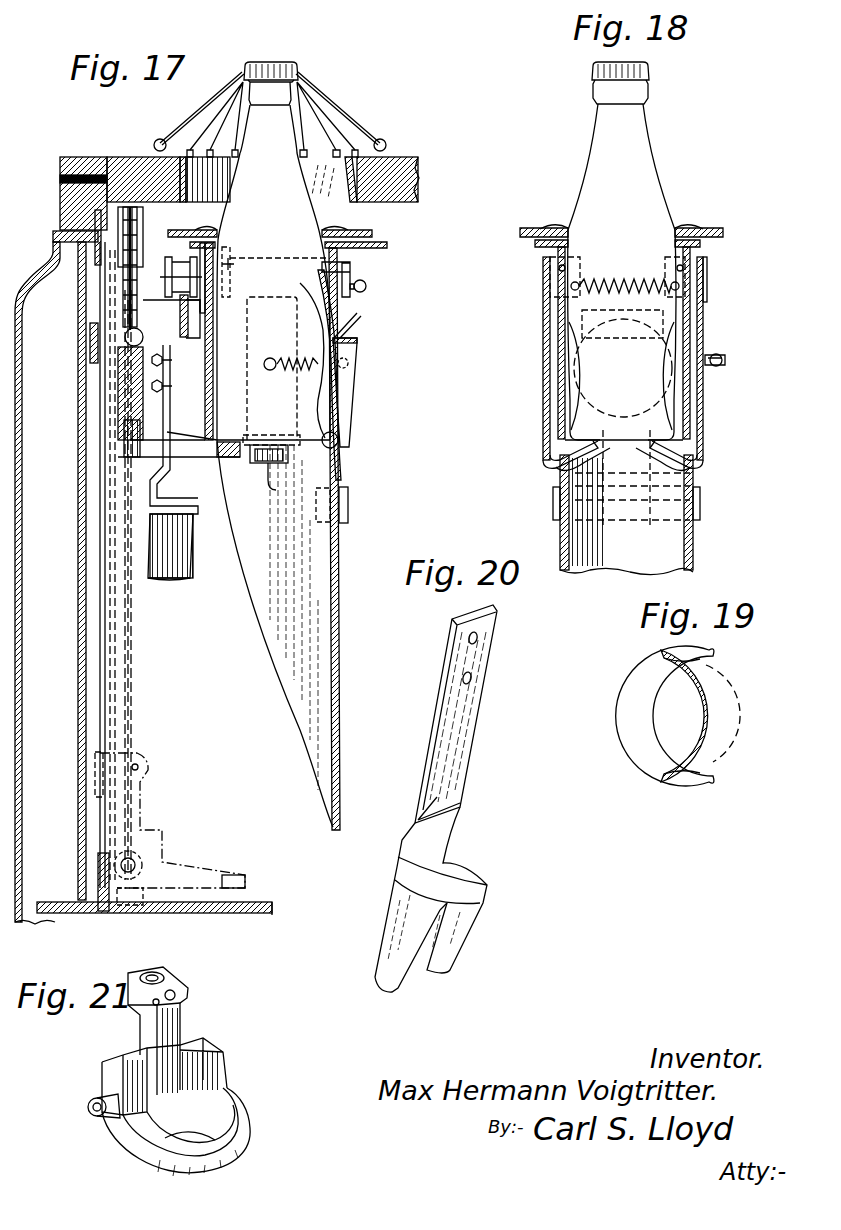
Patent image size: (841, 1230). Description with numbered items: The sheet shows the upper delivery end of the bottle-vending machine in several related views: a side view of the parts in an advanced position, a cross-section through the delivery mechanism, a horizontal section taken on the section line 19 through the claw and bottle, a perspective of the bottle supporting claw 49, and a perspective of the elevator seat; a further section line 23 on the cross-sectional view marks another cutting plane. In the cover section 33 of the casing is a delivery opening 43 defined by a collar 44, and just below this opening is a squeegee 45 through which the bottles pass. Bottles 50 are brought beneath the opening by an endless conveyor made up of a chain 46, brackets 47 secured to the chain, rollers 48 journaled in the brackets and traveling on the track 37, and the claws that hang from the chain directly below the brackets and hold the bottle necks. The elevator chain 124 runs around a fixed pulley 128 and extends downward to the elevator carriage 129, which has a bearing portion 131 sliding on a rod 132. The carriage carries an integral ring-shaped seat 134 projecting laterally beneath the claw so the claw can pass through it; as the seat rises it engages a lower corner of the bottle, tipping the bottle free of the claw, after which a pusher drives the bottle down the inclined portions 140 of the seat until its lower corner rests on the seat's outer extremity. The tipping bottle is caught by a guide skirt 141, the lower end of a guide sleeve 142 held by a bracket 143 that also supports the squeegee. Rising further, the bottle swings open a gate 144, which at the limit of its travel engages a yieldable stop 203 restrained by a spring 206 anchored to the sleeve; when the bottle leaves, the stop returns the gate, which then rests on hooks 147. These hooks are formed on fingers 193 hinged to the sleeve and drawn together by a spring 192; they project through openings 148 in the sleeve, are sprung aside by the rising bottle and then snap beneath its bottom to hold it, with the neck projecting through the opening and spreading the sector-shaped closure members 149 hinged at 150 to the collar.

In FIG. 17, the section line 19 is at (136, 508).
In FIG. 18, the section line 23- 23 is at (523, 338).
In FIG. 17, the cover section 33 is at (419, 181).
In FIG. 17, the track 37 is at (182, 307).
In FIG. 17, the delivery opening 43 is at (317, 160).
In FIG. 17, the collar 44 is at (380, 154).
In FIG. 17, the squeegee 45 is at (338, 224).
In FIG. 18, the squeegee 45 is at (672, 220).
In FIG. 17, the chain 46 is at (196, 345).
In FIG. 17, the brackets 47 is at (200, 306).
In FIG. 17, the rollers 48 is at (180, 262).
In FIG. 17, the bottle supporting claw 49 is at (165, 416).
In FIG. 19, the bottle supporting claw 49 is at (690, 786).
In FIG. 20, the bottle supporting claw 49 is at (488, 886).
In FIG. 18, the bottle 50 is at (623, 363).
In FIG. 19, the bottle 50 is at (740, 718).
In FIG. 17, the elevator chain 124 is at (126, 313).
In FIG. 17, the pulley 128 is at (118, 266).
In FIG. 17, the elevator carriage 129 is at (163, 835).
In FIG. 21, the elevator carriage 129 is at (200, 1042).
In FIG. 17, the bearing portion 131 is at (90, 350).
In FIG. 21, the bearing portion 131 is at (165, 975).
In FIG. 17, the rod 132 is at (115, 733).
In FIG. 21, the seat 134 is at (225, 1150).
In FIG. 21, the inclined portions 140 is at (250, 1112).
In FIG. 17, the guide skirt 141 is at (339, 571).
In FIG. 18, the guide skirt 141 is at (691, 544).
In FIG. 17, the guide sleeve 142 is at (210, 390).
In FIG. 18, the guide sleeve 142 is at (690, 305).
In FIG. 17, the bracket 143 is at (376, 249).
In FIG. 17, the gate 144 is at (330, 395).
In FIG. 17, the hooks 147 is at (282, 465).
In FIG. 18, the hooks 147 is at (700, 463).
In FIG. 17, the openings 148 is at (276, 488).
In FIG. 18, the openings 148 is at (690, 440).
In FIG. 17, the closure members 149 is at (212, 112).
In FIG. 17, the hinge 150 is at (154, 143).
In FIG. 18, the spring 192 is at (630, 282).
In FIG. 18, the fingers 193 is at (705, 268).
In FIG. 17, the yieldable stop 203 is at (357, 347).
In FIG. 17, the spring 206 is at (300, 352).